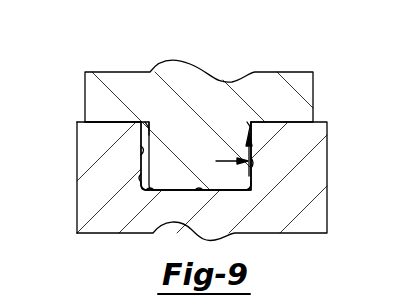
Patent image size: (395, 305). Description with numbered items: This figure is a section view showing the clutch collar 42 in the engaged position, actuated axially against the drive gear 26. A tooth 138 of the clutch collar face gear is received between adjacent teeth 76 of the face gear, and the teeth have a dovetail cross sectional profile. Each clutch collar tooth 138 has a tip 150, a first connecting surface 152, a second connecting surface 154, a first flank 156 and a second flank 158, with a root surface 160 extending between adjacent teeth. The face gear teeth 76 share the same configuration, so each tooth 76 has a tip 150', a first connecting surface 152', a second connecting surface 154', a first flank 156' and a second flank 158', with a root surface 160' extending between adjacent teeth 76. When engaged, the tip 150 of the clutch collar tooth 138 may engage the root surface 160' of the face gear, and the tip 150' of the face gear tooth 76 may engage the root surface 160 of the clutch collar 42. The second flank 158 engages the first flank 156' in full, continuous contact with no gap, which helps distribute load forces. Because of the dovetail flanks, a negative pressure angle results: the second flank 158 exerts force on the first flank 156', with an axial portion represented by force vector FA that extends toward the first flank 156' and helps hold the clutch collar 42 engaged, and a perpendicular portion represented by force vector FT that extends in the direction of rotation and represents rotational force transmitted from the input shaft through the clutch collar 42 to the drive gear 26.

The drive gear 26 is at (77, 192).
The clutch collar 42 is at (290, 72).
The teeth of the face gear 76 is at (92, 142).
The teeth of the clutch collar face gear 138 is at (183, 184).
The tip 150 is at (217, 205).
The tip 150' is at (224, 99).
The first connecting surface 152 is at (168, 205).
The first connecting surface 152' is at (262, 102).
The second connecting surface 154 is at (259, 221).
The second connecting surface 154' is at (171, 130).
The first flank 156 is at (113, 185).
The first flank 156' is at (230, 114).
The second flank 158 is at (281, 180).
The second flank 158' is at (124, 161).
The root surface 160 is at (171, 104).
The root surface 160' is at (121, 227).
The force vector Fa FA is at (259, 152).
The force vector Ft FT is at (222, 161).